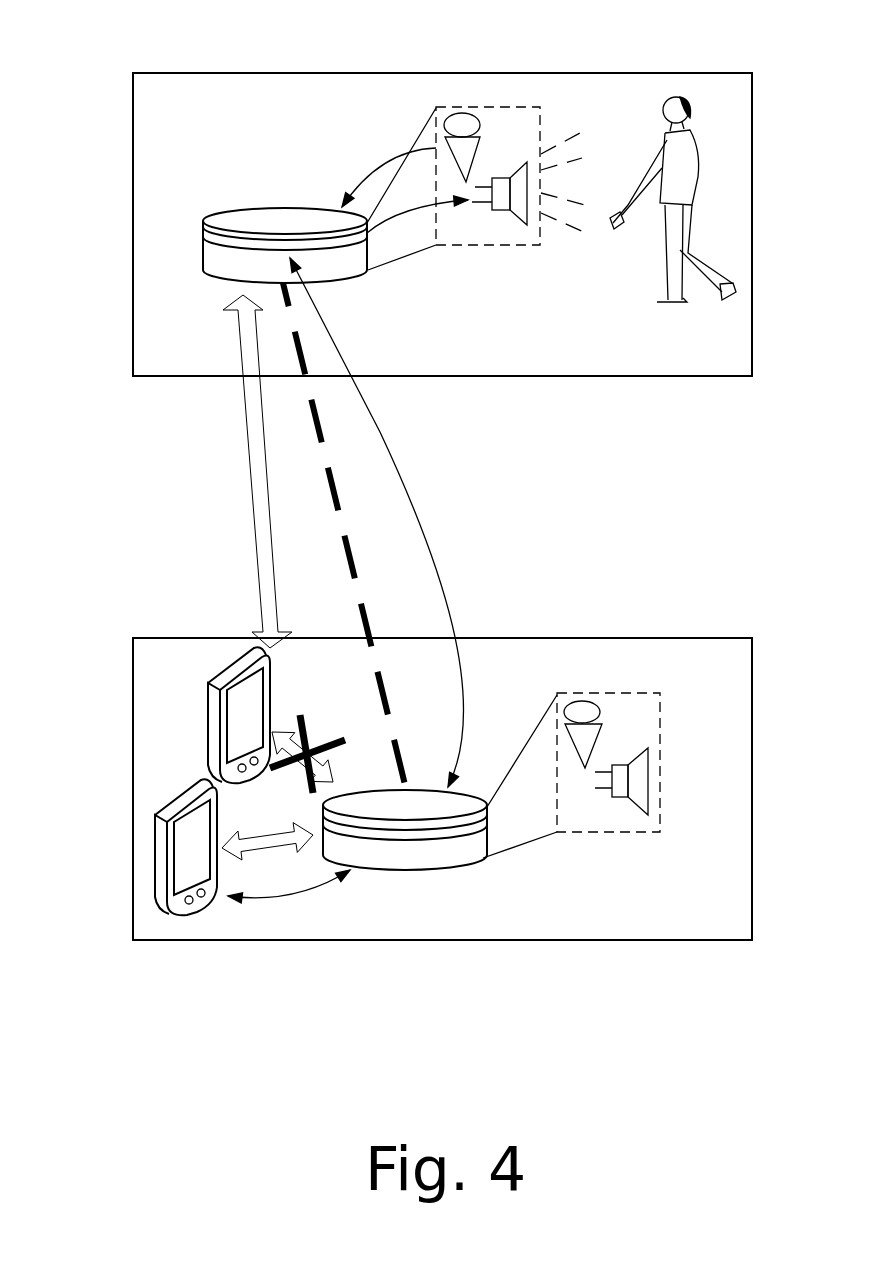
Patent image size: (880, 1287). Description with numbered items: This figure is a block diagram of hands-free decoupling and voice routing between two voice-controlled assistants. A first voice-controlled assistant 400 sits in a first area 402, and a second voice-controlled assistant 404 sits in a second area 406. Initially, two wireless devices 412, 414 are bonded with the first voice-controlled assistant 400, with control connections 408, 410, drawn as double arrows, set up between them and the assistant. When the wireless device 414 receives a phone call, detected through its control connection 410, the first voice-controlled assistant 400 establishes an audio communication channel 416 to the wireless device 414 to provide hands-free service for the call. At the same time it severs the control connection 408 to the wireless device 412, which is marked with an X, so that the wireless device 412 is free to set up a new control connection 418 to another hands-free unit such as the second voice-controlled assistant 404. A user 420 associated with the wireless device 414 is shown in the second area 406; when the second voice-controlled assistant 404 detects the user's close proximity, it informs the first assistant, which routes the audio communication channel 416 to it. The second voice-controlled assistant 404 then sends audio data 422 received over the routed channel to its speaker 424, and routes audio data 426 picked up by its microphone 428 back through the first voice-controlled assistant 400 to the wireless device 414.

The first voice-controlled assistant 400 is at (408, 870).
The first area 402 is at (562, 938).
The second voice-controlled assistant 404 is at (244, 215).
The second area 406 is at (278, 73).
The control connection 408 is at (340, 763).
The control connection 410 is at (278, 843).
The wireless device 412 is at (205, 683).
The wireless device 414 is at (155, 820).
The audio communication channel 416 is at (380, 432).
The control connection 418 is at (250, 492).
The user 420 is at (674, 100).
The audio data 422 is at (407, 213).
The speaker 424 is at (512, 218).
The audio data 426 is at (398, 153).
The microphone 428 is at (452, 112).